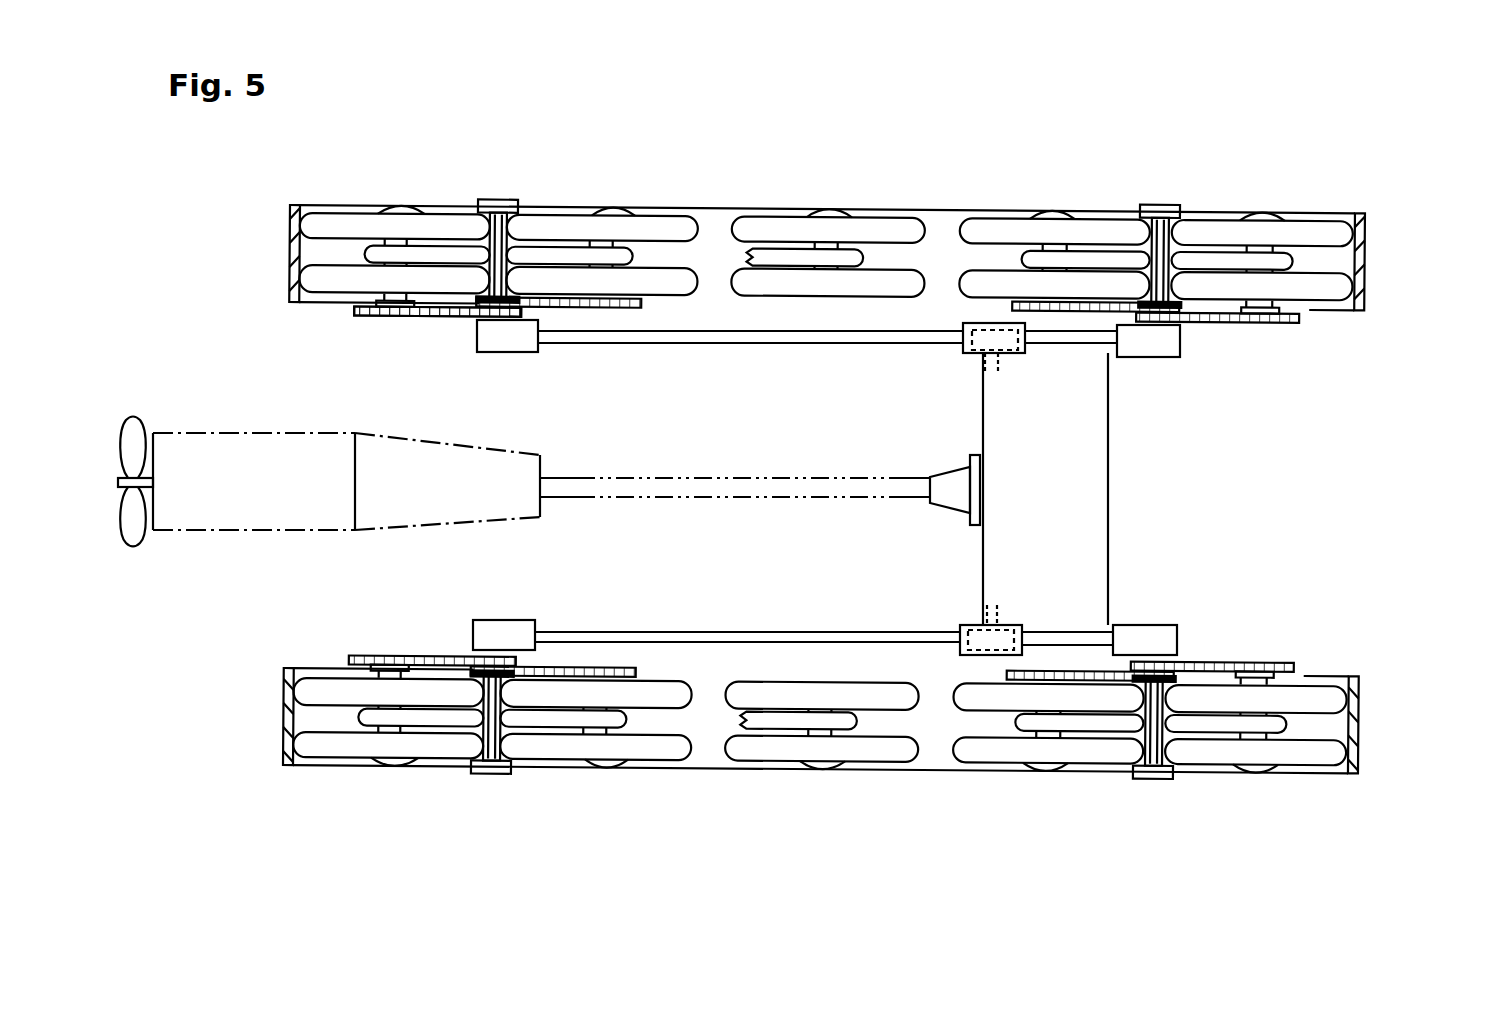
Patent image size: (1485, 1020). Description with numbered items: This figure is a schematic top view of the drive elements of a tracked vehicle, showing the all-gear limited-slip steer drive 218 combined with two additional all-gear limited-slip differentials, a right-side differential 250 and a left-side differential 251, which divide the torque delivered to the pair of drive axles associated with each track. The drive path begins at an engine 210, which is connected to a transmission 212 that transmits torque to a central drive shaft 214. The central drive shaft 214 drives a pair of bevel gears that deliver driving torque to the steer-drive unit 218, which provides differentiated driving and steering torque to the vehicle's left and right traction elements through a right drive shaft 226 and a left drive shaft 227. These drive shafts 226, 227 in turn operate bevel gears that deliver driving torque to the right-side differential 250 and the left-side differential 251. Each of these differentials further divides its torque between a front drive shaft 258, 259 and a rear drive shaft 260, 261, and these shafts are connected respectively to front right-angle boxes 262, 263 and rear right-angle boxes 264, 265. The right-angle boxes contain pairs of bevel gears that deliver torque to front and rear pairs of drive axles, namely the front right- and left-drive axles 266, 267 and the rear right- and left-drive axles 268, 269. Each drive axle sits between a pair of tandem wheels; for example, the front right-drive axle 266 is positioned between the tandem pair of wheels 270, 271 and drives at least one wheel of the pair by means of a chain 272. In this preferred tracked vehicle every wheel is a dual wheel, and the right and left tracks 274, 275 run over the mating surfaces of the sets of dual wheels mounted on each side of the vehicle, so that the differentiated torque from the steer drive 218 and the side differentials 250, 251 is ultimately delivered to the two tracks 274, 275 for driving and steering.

The engine 210 is at (268, 504).
The transmission 212 is at (455, 497).
The central drive shaft 214 is at (788, 453).
The all-gear limited-slip steer drive 218 is at (1064, 487).
The right drive shaft 226 is at (985, 366).
The left drive shaft 227 is at (982, 615).
The right-side differential 250 is at (987, 330).
The left-side differential 251 is at (980, 623).
The front drive shaft 258 is at (800, 338).
The front drive shaft 259 is at (840, 637).
The rear drive shaft 260 is at (1077, 342).
The rear drive shaft 261 is at (1088, 607).
The front right-angle box 262 is at (520, 335).
The front right-angle box 263 is at (503, 637).
The rear right-angle box 264 is at (1158, 342).
The rear right-angle box 265 is at (1123, 632).
The front right-drive axle 266 is at (515, 228).
The front left-drive axle 267 is at (502, 772).
The rear right-drive axle 268 is at (1165, 230).
The rear left-drive axle 269 is at (1167, 772).
The tandem wheel 270 is at (352, 228).
The tandem wheel 271 is at (650, 235).
The chain 272 is at (380, 320).
The right track 274 is at (1363, 262).
The left track 275 is at (282, 728).